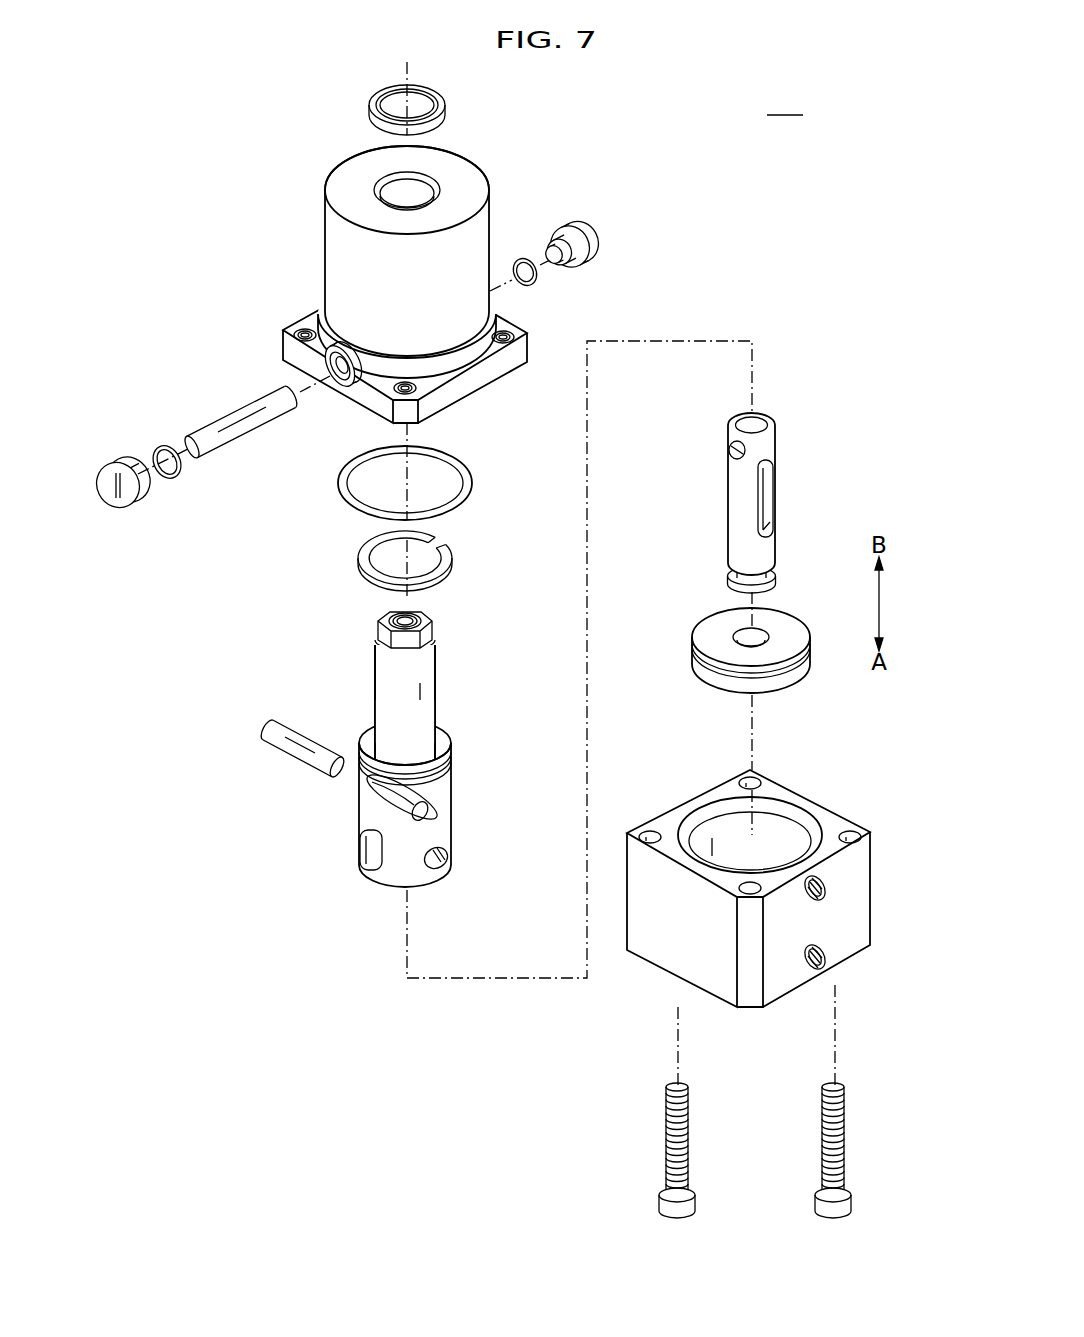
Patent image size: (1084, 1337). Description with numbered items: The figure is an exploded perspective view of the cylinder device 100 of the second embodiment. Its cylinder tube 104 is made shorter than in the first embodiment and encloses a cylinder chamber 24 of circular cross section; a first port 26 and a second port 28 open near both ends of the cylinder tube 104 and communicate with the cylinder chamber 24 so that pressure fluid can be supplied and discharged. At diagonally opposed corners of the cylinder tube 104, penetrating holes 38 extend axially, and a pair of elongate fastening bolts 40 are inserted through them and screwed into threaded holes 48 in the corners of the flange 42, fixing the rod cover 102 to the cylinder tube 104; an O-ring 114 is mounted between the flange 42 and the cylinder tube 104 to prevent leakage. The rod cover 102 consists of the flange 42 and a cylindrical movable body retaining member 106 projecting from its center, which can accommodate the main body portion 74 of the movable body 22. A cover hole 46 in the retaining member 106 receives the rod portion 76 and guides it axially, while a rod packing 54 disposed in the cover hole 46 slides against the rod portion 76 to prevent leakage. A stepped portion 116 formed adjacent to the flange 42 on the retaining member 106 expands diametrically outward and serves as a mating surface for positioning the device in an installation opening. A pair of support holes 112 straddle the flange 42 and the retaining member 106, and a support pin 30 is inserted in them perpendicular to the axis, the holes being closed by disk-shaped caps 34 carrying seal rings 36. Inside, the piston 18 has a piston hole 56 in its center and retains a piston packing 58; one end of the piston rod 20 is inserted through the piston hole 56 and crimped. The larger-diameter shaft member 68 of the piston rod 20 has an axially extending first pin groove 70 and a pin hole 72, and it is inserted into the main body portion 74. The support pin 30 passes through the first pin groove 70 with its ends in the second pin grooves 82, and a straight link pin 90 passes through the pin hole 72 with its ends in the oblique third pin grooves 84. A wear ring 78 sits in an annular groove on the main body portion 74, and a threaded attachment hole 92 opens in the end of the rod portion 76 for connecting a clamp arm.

The cylinder device 100 is at (785, 104).
The rod cover 102 is at (311, 225).
The cylinder tube 104 is at (770, 891).
The movable body retaining member 106 is at (447, 162).
The piston 18 is at (723, 640).
The piston rod 20 is at (756, 503).
The movable body 22 is at (410, 792).
The cylinder chamber 24 is at (730, 828).
The first port 26 is at (815, 965).
The second port 28 is at (826, 888).
The support pin 30 is at (262, 402).
The cap 34 is at (110, 465).
The seal ring 36 is at (165, 450).
The penetrating hole 38 is at (650, 830).
The fastening bolt 40 is at (822, 1168).
The flange 42 is at (478, 382).
The cover hole 46 is at (398, 198).
The threaded hole 48 is at (303, 333).
The rod packing 54 is at (405, 95).
The piston hole 56 is at (740, 637).
The piston packing 58 is at (787, 672).
The shaft member 68 is at (738, 510).
The first pin groove 70 is at (768, 494).
The pin hole 72 is at (735, 451).
The main body portion 74 is at (393, 880).
The rod portion 76 is at (405, 692).
The wear ring 78 is at (358, 555).
The second pin groove 82 is at (442, 867).
The third pin groove 84 is at (380, 790).
The link pin 90 is at (270, 742).
The attachment hole 92 is at (383, 620).
The support hole 112 is at (345, 382).
The O-ring 114 is at (453, 458).
The stepped portion 116 is at (442, 365).